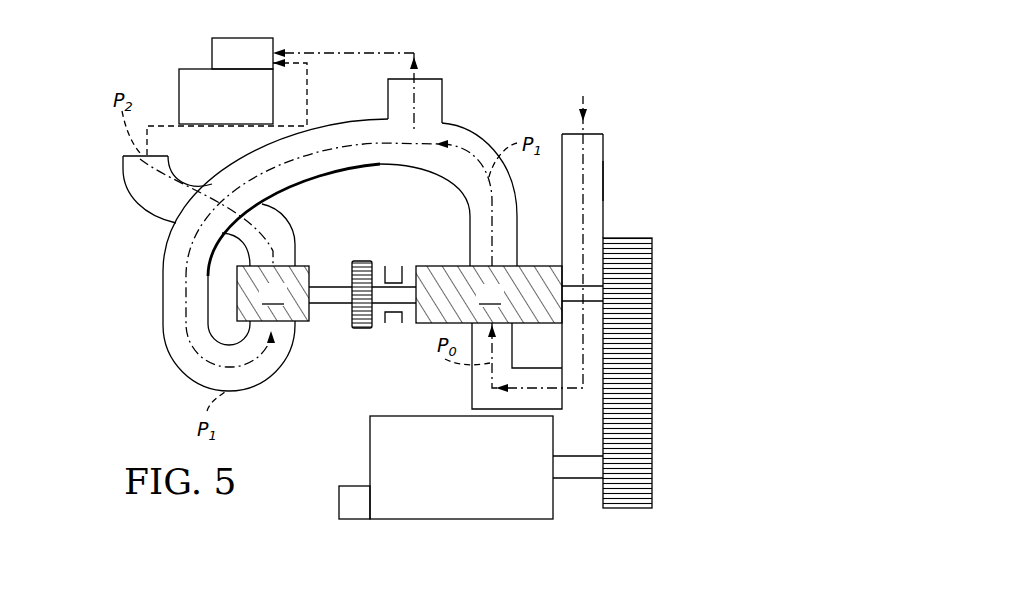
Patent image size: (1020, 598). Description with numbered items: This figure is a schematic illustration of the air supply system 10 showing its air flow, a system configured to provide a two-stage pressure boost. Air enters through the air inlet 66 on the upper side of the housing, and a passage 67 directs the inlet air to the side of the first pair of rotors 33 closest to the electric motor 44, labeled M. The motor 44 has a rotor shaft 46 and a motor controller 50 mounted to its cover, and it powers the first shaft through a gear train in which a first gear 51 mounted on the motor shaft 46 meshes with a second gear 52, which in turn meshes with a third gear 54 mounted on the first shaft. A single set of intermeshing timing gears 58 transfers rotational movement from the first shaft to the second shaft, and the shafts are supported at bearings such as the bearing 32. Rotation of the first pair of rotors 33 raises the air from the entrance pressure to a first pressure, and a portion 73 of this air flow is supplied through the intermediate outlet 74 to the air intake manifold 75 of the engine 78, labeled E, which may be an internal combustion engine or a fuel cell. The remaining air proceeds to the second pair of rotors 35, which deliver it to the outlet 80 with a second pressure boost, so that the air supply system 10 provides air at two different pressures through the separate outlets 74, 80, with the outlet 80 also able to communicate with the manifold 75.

The air supply system 10 is at (653, 57).
The bearing 32 is at (379, 323).
The first pair of rotors 33 is at (489, 294).
The second pair of rotors 35 is at (273, 293).
The electric motor 44 is at (463, 518).
The rotor shaft 46 is at (571, 480).
The motor controller 50 is at (339, 500).
The first gear 51 is at (652, 465).
The second gear 52 is at (652, 380).
The third gear 54 is at (652, 292).
The timing gears 58 is at (348, 334).
The air inlet 66 is at (598, 133).
The passage 67 is at (600, 185).
The portion of the air flow 73 is at (427, 108).
The intermediate outlet 74 is at (426, 78).
The air intake manifold 75 is at (212, 53).
The engine 78 is at (179, 97).
The outlet 80 is at (143, 152).